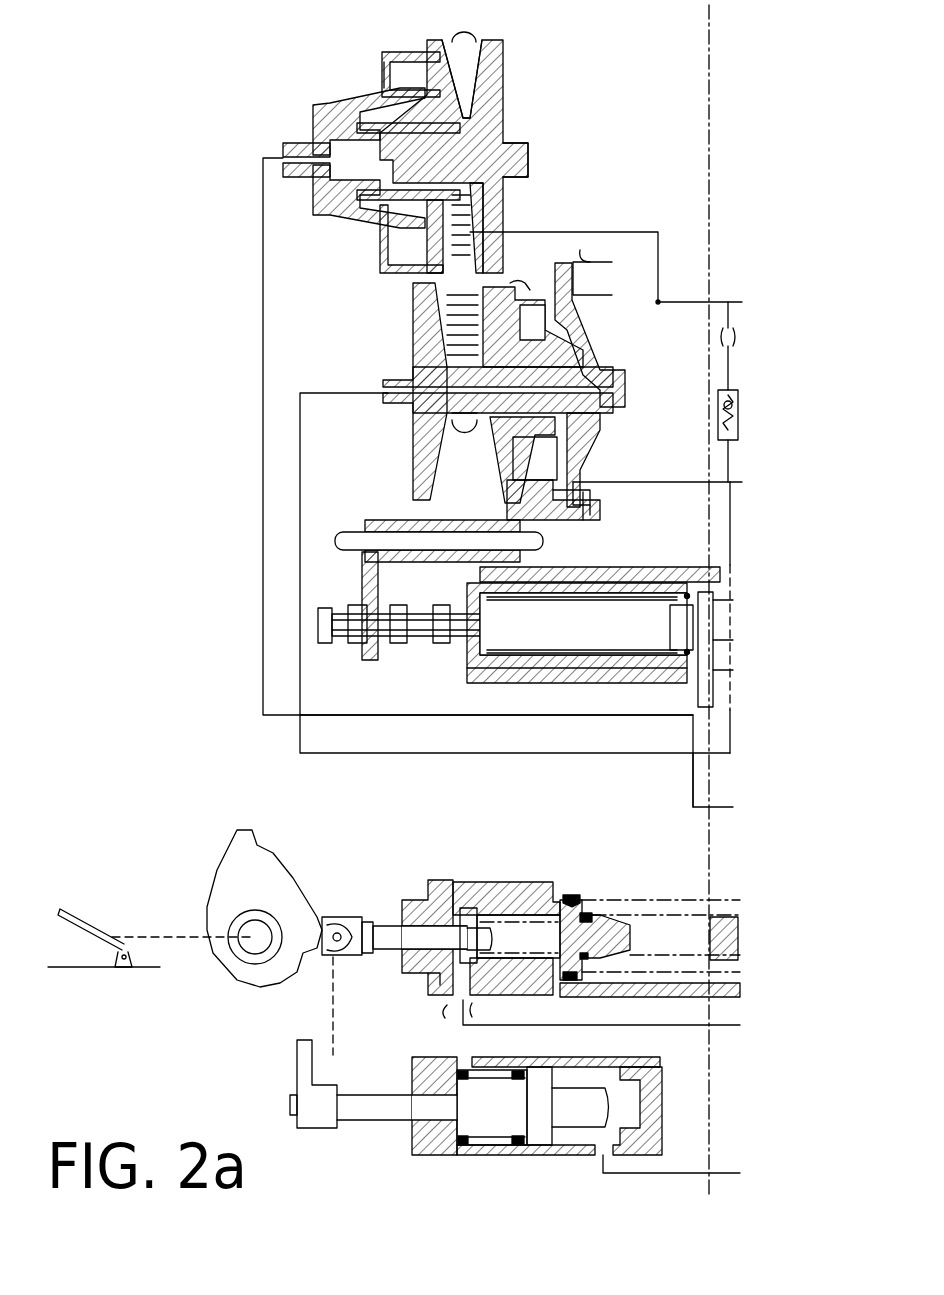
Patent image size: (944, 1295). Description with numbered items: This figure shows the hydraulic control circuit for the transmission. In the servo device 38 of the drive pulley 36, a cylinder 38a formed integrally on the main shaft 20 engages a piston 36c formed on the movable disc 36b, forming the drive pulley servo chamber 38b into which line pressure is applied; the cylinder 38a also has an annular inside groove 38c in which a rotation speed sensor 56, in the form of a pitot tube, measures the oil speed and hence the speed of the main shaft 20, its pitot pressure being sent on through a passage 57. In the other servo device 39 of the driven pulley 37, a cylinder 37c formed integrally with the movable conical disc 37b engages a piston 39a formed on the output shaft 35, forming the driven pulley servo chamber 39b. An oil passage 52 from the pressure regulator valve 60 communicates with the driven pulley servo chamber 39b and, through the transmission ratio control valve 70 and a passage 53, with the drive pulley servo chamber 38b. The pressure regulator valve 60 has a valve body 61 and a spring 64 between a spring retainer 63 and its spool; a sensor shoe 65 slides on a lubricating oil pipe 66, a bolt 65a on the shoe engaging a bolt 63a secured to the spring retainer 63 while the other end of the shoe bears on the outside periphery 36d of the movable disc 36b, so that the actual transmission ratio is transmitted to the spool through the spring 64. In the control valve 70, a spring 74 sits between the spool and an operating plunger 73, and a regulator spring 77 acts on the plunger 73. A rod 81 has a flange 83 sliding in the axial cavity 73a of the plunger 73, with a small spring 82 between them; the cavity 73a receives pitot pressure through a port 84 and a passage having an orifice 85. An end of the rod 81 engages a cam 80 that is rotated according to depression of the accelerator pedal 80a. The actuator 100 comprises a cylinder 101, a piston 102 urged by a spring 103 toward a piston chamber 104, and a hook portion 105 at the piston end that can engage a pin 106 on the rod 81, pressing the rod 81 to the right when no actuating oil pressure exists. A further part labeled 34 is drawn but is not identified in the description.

The main shaft 20 is at (405, 380).
The ball 34 is at (463, 435).
The output shaft 35 is at (522, 148).
The drive pulley 36 is at (405, 428).
The movable disc 36b is at (512, 478).
The piston 36c is at (530, 290).
The outside periphery 36d is at (525, 300).
The driven pulley 37 is at (512, 100).
The movable conical disc 37b is at (400, 60).
The cylinder 37c is at (385, 56).
The servo device 38 is at (608, 365).
The cylinder 38a is at (590, 480).
The drive pulley servo chamber 38b is at (560, 468).
The annular inside groove 38c is at (585, 265).
The servo device 39 is at (338, 220).
The piston 39a is at (384, 82).
The driven pulley servo chamber 39b is at (410, 250).
The oil passage 52 is at (575, 716).
The passage 53 is at (640, 760).
The rotation speed sensor 56 is at (595, 515).
The passage 57 is at (660, 486).
The pressure regulator valve 60 is at (645, 568).
The valve body 61 is at (690, 570).
The spring retainer 63 is at (555, 678).
The bolt 63a is at (422, 615).
The spring 64 is at (668, 645).
The sensor shoe 65 is at (362, 590).
The bolt 65a is at (345, 645).
The lubricating oil pipe 66 is at (352, 535).
The transmission ratio control valve 70 is at (428, 878).
The operating plunger 73 is at (540, 902).
The axial cavity 73a is at (560, 978).
The spring 74 is at (572, 898).
The regulator spring 77 is at (585, 916).
The cam 80 is at (300, 905).
The accelerator pedal 80a is at (100, 940).
The rod 81 is at (380, 955).
The small spring 82 is at (550, 957).
The flange 83 is at (465, 912).
The port 84 is at (470, 968).
The orifice 85 is at (440, 1015).
The actuator 100 is at (410, 1158).
The cylinder 101 is at (658, 1065).
The piston 102 is at (548, 1088).
The spring 103 is at (475, 1082).
The piston chamber 104 is at (580, 1143).
The hook portion 105 is at (297, 1070).
The pin 106 is at (355, 915).